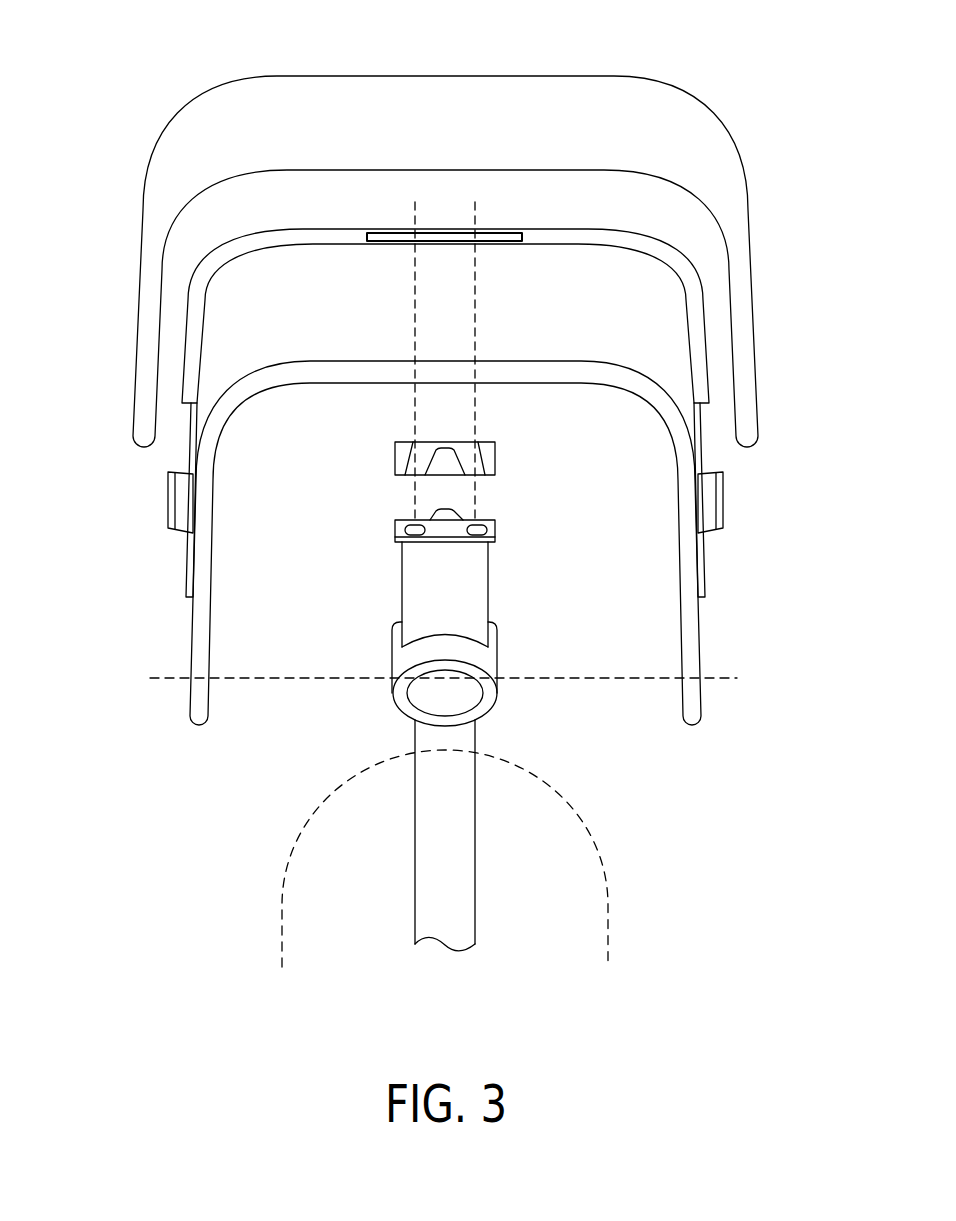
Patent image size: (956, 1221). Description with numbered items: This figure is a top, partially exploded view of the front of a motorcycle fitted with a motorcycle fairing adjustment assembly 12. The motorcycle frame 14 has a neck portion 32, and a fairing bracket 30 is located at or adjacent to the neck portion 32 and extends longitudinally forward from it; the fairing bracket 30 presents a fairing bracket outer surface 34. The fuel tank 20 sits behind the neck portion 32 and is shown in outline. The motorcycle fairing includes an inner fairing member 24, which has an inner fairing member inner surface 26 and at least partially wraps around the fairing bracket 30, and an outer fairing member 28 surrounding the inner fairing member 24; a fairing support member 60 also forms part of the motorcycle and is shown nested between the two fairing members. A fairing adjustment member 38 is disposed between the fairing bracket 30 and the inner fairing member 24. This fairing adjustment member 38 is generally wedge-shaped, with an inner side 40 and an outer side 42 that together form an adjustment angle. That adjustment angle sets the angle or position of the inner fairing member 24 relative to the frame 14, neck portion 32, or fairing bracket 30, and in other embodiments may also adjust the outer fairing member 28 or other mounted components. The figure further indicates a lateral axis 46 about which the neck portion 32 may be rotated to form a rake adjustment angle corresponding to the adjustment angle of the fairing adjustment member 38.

The motorcycle fairing adjustment assembly 12 is at (100, 216).
The frame 14 is at (458, 857).
The fuel tank 20 is at (588, 938).
The inner fairing member 24 is at (693, 697).
The inner fairing member inner surface 26 is at (364, 383).
The outer fairing member 28 is at (715, 149).
The fairing bracket 30 is at (467, 597).
The neck portion 32 is at (556, 664).
The fairing bracket outer surface 34 is at (495, 537).
The fairing adjustment member 38 is at (495, 463).
The inner side 40 is at (477, 475).
The outer side 42 is at (443, 442).
The lateral axis 46 is at (225, 678).
The fairing support member 60 is at (245, 247).